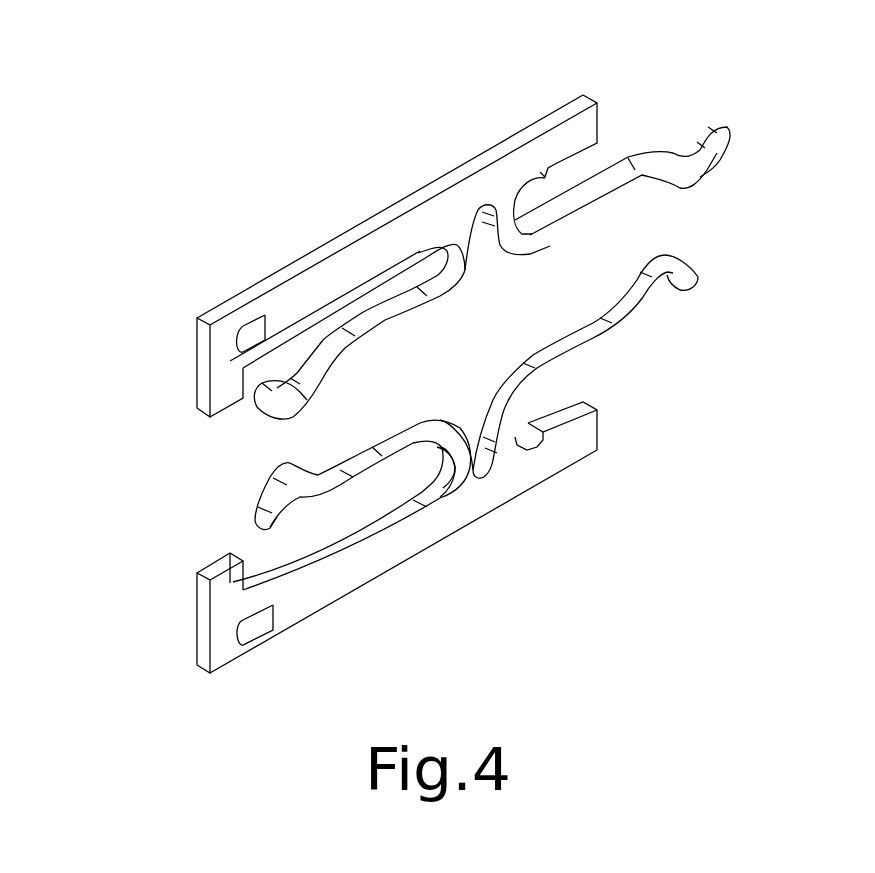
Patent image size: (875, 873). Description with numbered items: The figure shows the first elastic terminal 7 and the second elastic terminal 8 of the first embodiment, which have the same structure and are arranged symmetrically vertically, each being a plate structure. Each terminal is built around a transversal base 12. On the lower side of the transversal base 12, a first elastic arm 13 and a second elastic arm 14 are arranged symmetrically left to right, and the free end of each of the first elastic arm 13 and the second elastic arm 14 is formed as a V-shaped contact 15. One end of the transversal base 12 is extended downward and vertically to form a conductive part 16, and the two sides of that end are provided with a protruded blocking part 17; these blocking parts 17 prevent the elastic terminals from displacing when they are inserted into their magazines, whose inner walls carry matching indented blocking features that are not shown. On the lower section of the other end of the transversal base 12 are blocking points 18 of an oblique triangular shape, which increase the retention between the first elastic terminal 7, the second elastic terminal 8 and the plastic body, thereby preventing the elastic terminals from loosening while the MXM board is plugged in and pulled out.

The first elastic terminal 7 is at (390, 203).
The second elastic terminal 8 is at (483, 520).
The transversal base 12 is at (467, 192).
The first elastic arm 13 is at (383, 330).
The second elastic arm 14 is at (632, 160).
The V-shaped contact 15 is at (700, 177).
The conductive part 16 is at (220, 378).
The blocking part 17 is at (253, 337).
The blocking point 18 is at (548, 172).